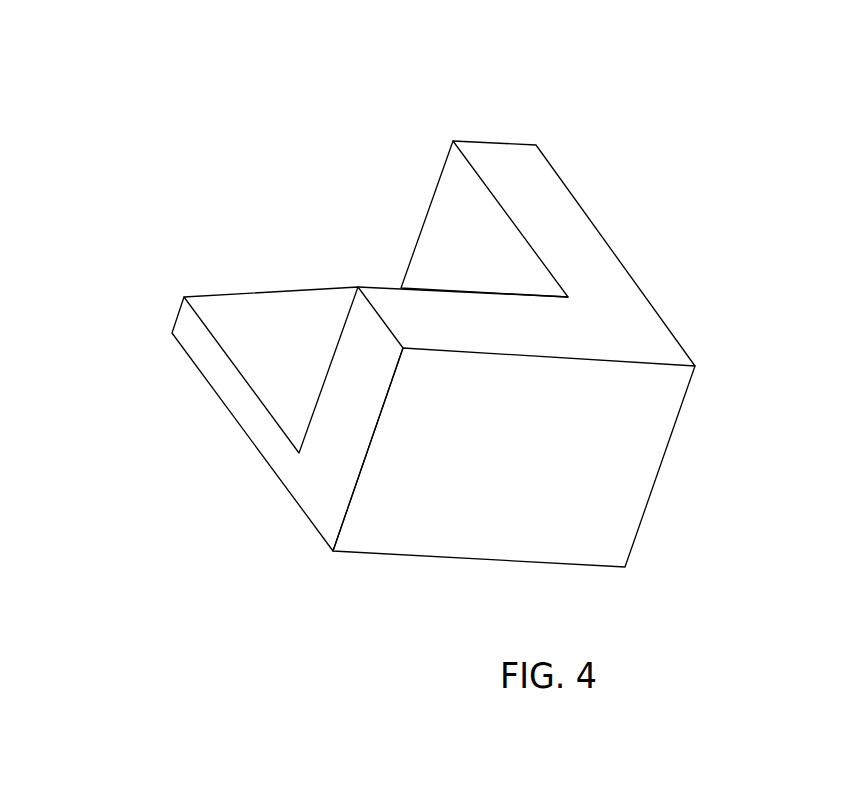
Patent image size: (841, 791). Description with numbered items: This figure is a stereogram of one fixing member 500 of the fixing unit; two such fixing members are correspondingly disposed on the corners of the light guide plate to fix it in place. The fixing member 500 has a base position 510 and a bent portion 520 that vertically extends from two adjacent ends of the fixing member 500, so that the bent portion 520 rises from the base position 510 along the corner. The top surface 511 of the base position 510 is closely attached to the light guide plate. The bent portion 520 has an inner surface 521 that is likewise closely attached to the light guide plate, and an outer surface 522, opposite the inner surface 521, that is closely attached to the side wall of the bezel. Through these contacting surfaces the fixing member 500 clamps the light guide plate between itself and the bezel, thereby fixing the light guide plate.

The fixing member 500 is at (188, 52).
The base position 510 is at (232, 451).
The top surface 511 is at (257, 317).
The bent portion 520 is at (560, 175).
The inner surface 521 is at (452, 218).
The outer surface 522 is at (609, 467).